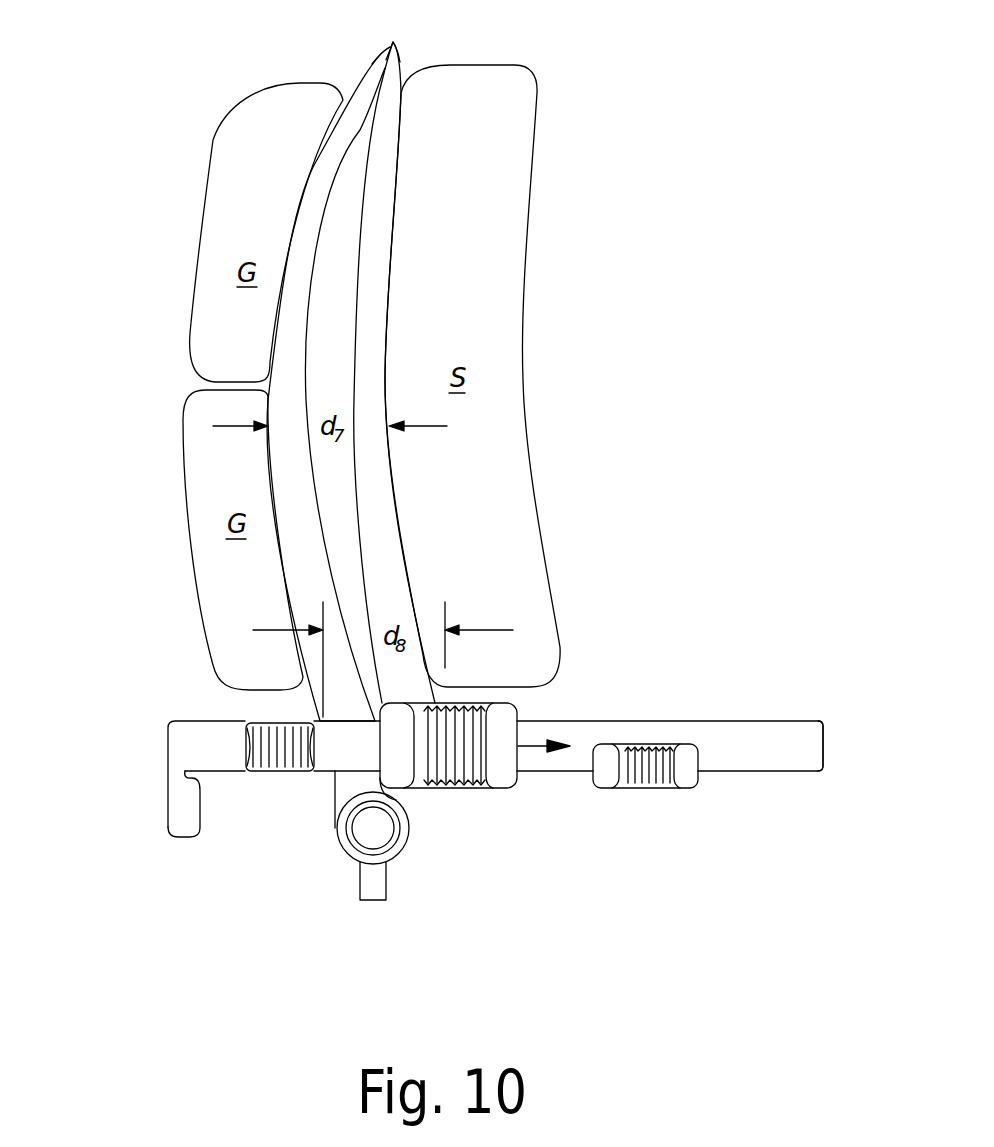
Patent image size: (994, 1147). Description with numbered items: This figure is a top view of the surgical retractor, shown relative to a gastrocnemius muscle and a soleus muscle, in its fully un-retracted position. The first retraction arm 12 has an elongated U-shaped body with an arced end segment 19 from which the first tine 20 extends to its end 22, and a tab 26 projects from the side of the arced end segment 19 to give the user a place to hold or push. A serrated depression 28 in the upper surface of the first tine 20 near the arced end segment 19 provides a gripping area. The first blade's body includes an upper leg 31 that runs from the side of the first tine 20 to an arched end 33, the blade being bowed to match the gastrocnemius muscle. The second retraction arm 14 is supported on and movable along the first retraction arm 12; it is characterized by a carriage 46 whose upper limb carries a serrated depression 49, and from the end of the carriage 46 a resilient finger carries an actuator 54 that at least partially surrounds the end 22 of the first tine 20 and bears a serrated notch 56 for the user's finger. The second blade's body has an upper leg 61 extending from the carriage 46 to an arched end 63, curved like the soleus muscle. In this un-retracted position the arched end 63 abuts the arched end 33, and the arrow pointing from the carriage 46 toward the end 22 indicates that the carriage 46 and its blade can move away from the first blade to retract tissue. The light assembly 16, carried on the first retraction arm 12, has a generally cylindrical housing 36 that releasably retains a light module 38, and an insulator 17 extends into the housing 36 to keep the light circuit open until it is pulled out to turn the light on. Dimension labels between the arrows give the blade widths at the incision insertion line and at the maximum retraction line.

The first retraction arm 12 is at (135, 701).
The second retraction arm 14 is at (562, 783).
The light assembly 16 is at (365, 862).
The insulator 17 is at (370, 887).
The arced end segment 19 is at (168, 743).
The first tine 20 is at (733, 730).
The end of the first tine 22 is at (823, 743).
The tab 26 is at (173, 824).
The depression 28 is at (282, 762).
The upper leg 31 is at (293, 388).
The arched end 33 is at (377, 56).
The housing 36 is at (408, 840).
The light module 38 is at (368, 827).
The carriage 46 is at (517, 705).
The depression 49 is at (453, 788).
The actuator 54 is at (693, 782).
The serrated notch 56 is at (648, 788).
The upper leg 61 is at (370, 348).
The arched end 63 is at (403, 62).